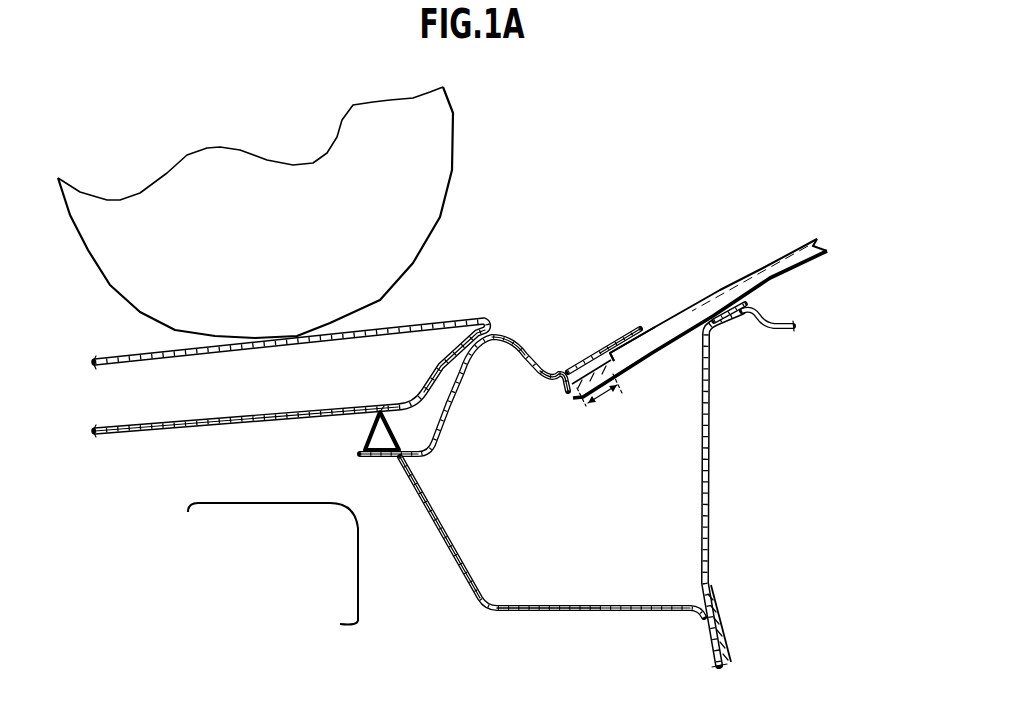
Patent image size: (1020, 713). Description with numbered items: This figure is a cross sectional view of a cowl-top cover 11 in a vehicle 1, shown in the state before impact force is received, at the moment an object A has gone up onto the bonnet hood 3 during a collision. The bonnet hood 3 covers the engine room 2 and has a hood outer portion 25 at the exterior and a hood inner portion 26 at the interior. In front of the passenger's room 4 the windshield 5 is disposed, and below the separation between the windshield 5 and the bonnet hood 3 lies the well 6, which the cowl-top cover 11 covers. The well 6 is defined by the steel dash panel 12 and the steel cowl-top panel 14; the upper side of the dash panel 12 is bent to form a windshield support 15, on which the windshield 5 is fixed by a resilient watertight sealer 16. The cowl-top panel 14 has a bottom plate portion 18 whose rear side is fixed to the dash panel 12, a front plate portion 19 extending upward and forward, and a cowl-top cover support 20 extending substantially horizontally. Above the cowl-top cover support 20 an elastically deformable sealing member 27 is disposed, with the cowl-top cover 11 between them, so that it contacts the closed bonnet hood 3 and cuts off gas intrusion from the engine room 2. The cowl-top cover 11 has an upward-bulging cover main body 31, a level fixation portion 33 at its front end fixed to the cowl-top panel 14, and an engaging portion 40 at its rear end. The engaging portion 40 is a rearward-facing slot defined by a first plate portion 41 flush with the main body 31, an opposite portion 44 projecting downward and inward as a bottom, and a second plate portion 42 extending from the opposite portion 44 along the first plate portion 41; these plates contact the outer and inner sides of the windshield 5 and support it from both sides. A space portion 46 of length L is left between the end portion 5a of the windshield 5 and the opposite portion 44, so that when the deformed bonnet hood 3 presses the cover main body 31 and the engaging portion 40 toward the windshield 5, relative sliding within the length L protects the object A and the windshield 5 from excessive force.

The vehicle 1 is at (546, 672).
The engine room 2 is at (128, 468).
The bonnet hood 3 is at (470, 320).
The passenger's room 4 is at (814, 293).
The windshield 5 is at (763, 266).
The end portion of the windshield 5a is at (598, 352).
The well 6 is at (701, 562).
The cowl-top cover 11 is at (498, 336).
The dash panel 12 is at (712, 455).
The cowl-top panel 14 is at (432, 512).
The windshield support 15 is at (733, 330).
The sealer 16 is at (712, 316).
The bottom plate portion 18 is at (628, 613).
The front plate portion 19 is at (440, 548).
The cowl-top cover support 20 is at (386, 461).
The hood outer portion 25 is at (128, 350).
The hood inner portion 26 is at (177, 434).
The sealing member 27 is at (362, 430).
The cover main body 31 is at (527, 350).
The fixation portion 33 is at (358, 460).
The engaging portion 40 is at (577, 366).
The first plate portion 41 is at (615, 338).
The second plate portion 42 is at (640, 358).
The opposite portion 44 is at (548, 379).
The space portion 46 is at (567, 396).
The object A is at (452, 121).
The length L is at (599, 404).